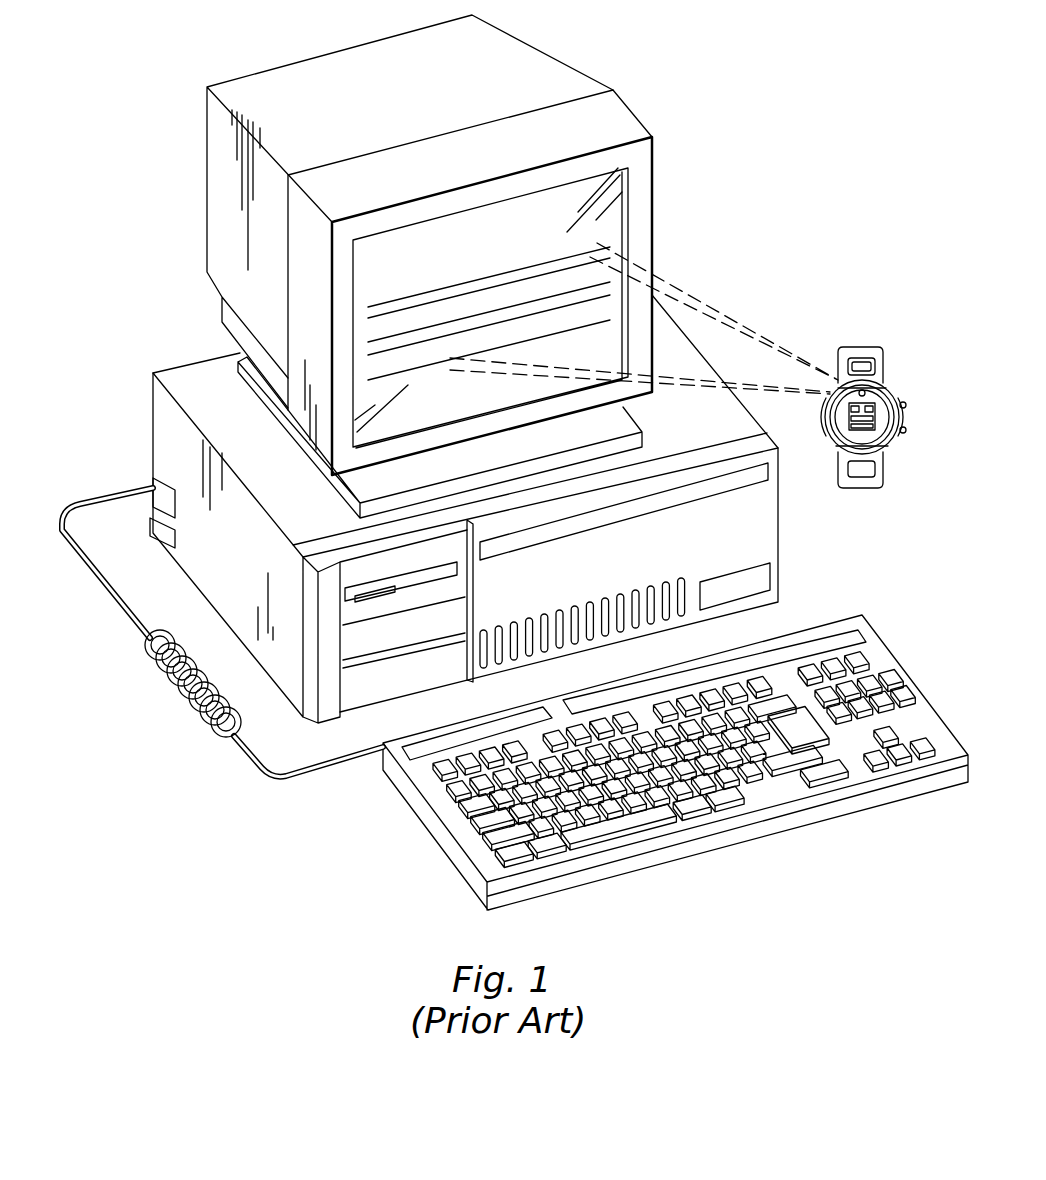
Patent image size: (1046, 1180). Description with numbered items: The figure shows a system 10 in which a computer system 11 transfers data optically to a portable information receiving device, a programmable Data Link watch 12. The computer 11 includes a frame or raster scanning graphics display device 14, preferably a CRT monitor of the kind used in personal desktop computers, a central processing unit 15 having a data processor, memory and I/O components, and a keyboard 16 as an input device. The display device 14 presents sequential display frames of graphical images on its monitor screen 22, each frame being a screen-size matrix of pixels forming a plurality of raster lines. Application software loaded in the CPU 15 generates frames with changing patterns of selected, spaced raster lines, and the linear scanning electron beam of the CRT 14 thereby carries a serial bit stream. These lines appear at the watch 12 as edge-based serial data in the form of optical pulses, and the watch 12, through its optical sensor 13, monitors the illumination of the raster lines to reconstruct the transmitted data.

The system 10 is at (778, 258).
The computer system 11 is at (515, 462).
The programmable Data Link watch 12 is at (883, 380).
The optical sensor 13 is at (883, 392).
The graphics display device 14 is at (459, 266).
The central processing unit 15 is at (760, 545).
The keyboard 16 is at (888, 655).
The monitor screen 22 is at (608, 222).